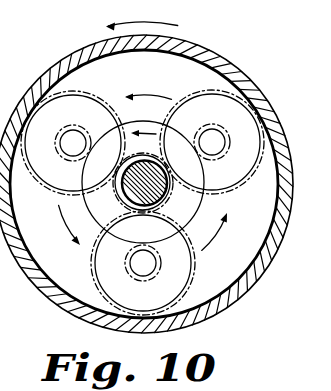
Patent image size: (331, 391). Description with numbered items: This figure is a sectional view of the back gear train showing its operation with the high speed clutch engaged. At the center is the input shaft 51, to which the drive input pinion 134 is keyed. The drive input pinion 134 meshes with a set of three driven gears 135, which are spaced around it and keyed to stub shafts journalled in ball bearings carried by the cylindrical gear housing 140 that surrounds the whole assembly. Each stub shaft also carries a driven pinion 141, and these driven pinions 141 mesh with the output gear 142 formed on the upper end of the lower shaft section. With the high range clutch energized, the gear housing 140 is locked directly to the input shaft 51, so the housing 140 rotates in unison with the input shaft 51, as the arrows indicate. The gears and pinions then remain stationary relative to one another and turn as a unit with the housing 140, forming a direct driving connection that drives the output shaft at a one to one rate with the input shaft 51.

The gear housing 140 is at (215, 53).
The driven gears 135 is at (92, 94).
The driven pinion 141 is at (61, 128).
The drive input pinion 134 is at (145, 157).
The input shaft 51 is at (144, 207).
The output gear 142 is at (205, 205).